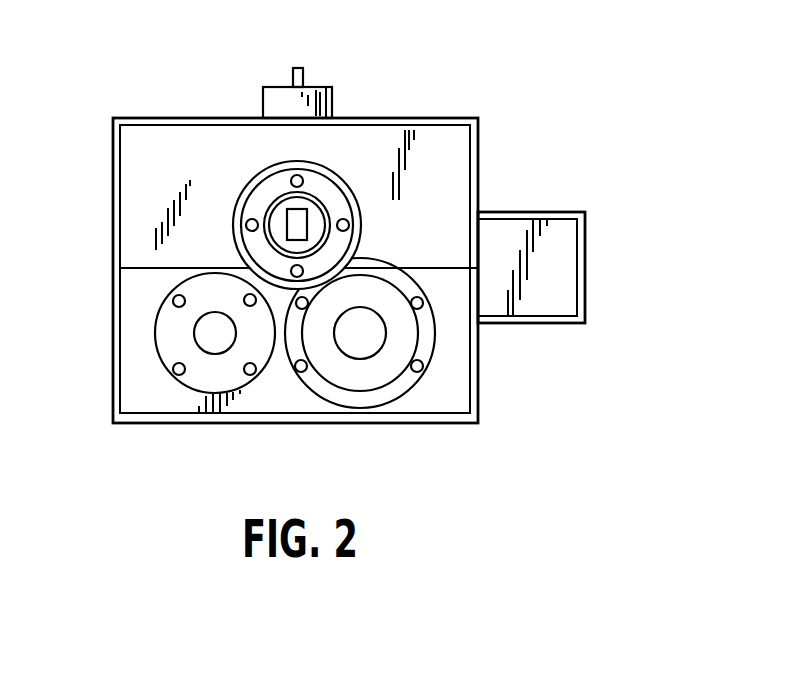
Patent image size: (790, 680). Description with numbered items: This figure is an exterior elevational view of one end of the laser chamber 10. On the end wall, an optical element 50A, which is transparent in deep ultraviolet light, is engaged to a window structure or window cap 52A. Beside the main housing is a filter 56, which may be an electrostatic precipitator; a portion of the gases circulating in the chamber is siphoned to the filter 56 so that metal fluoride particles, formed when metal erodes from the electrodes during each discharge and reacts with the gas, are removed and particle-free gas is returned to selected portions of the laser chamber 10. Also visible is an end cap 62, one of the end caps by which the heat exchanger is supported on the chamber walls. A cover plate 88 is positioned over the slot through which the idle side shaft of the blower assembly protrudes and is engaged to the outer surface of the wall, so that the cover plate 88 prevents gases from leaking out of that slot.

The laser chamber 10 is at (530, 97).
The optical element 50A is at (287, 220).
The window cap 52A is at (346, 182).
The filter 56 is at (562, 303).
The end cap 62 is at (155, 320).
The cover plate 88 is at (433, 345).